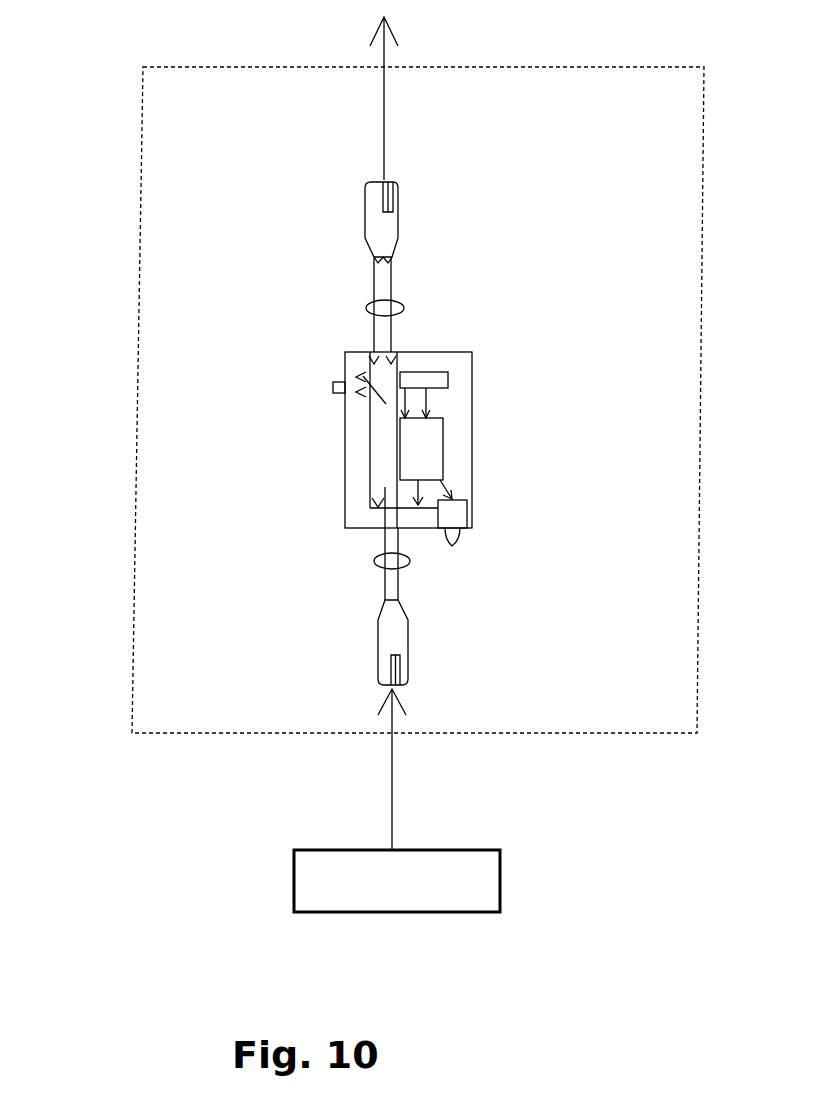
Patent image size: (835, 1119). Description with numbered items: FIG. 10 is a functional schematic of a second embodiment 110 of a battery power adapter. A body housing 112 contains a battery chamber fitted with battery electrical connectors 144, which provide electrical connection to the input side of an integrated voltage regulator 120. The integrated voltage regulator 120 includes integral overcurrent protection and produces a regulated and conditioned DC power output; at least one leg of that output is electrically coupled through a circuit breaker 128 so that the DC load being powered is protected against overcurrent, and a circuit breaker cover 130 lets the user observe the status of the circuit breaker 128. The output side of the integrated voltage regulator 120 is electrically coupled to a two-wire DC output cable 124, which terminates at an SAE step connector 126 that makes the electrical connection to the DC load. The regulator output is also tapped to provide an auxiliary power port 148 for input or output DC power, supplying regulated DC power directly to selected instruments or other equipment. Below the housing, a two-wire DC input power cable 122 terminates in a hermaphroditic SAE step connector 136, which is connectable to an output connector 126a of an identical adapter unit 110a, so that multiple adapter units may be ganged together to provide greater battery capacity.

The second embodiment 110 is at (377, 376).
The adapter unit 110a is at (397, 881).
The body housing 112 is at (458, 340).
The integrated voltage regulator 120 is at (440, 437).
The two-wire DC input power cable 122 is at (375, 557).
The two-wire DC output cable 124 is at (365, 308).
The SAE step connector 126 is at (364, 170).
The output connector 126a is at (398, 720).
The circuit breaker 128 is at (468, 514).
The circuit breaker cover 130 is at (450, 548).
The hermaphroditic SAE step connector 136 is at (378, 632).
The battery electrical connectors 144 is at (450, 377).
The auxiliary power port 148 is at (316, 388).